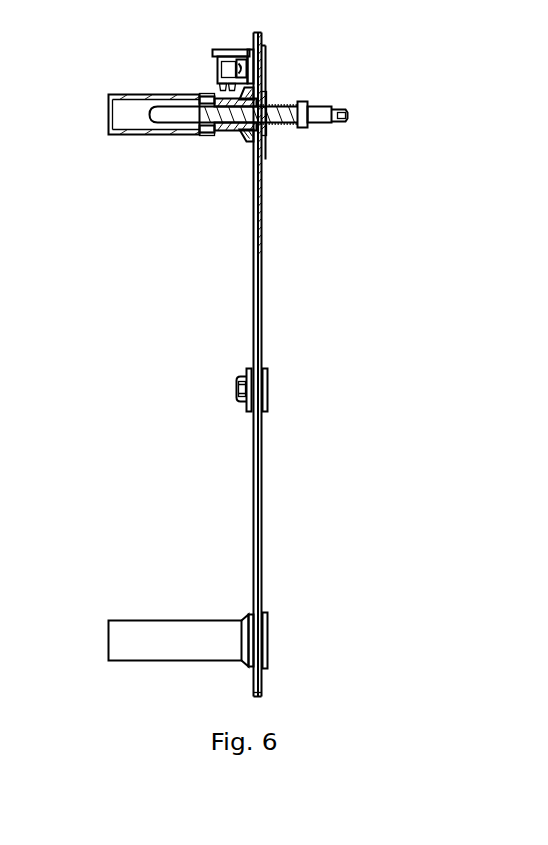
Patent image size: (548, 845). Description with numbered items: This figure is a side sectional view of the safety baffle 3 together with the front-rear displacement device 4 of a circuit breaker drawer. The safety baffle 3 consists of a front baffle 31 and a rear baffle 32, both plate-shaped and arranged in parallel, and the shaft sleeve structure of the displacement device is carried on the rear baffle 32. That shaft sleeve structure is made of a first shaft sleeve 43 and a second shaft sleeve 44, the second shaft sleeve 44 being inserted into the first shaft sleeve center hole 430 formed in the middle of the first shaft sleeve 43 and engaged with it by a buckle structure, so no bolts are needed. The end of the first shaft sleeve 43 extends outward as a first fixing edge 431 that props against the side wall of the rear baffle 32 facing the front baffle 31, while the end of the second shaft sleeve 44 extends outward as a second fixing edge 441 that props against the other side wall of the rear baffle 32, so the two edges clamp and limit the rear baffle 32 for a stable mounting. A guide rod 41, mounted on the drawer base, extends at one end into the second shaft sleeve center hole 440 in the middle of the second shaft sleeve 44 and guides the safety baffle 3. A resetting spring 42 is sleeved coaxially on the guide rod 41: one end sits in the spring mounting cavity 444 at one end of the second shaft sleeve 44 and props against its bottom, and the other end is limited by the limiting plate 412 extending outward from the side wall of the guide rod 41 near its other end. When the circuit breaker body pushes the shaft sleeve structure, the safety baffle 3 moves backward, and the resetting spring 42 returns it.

The safety baffle 3 is at (263, 260).
The front baffle 31 is at (254, 253).
The rear baffle 32 is at (255, 218).
The front-rear displacement device 4 is at (108, 122).
The guide rod 41 is at (318, 107).
The limiting plate 412 is at (283, 115).
The resetting spring 42 is at (282, 107).
The first shaft sleeve 43 is at (208, 97).
The first shaft sleeve center hole 430 is at (147, 113).
The first fixing edge 431 is at (257, 95).
The second shaft sleeve 44 is at (212, 131).
The second shaft sleeve center hole 440 is at (267, 97).
The second fixing edge 441 is at (257, 138).
The spring mounting cavity 444 is at (263, 125).